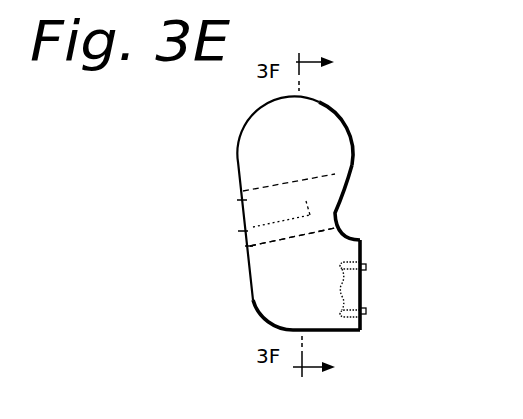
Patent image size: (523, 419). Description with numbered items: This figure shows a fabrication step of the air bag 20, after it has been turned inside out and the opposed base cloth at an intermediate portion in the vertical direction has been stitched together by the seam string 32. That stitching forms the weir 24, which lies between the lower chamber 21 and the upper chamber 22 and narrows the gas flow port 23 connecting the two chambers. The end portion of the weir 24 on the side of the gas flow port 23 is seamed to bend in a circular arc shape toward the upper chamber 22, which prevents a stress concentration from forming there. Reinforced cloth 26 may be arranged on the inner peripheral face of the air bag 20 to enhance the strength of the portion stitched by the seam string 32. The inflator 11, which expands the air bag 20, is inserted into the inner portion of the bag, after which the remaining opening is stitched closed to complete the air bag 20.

The inflator 11 is at (341, 291).
The air bag 20 is at (255, 213).
The lower chamber 21 is at (263, 306).
The upper chamber 22 is at (330, 130).
The gas flow port 23 is at (340, 214).
The weir 24 is at (255, 232).
The reinforced cloth 26 is at (262, 199).
The seam string 32 is at (250, 230).